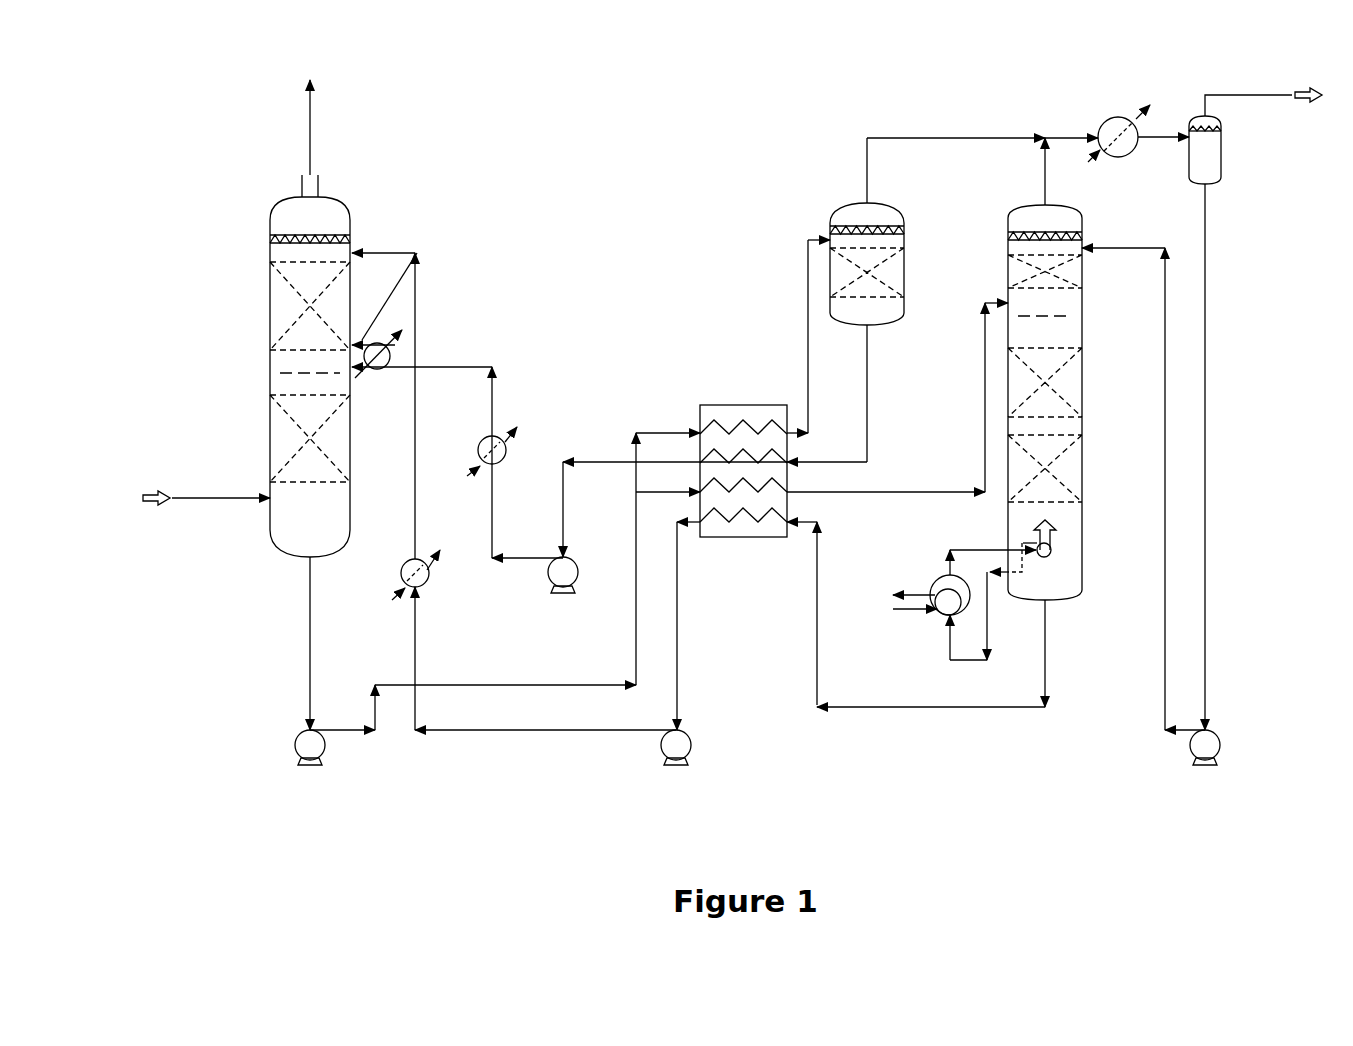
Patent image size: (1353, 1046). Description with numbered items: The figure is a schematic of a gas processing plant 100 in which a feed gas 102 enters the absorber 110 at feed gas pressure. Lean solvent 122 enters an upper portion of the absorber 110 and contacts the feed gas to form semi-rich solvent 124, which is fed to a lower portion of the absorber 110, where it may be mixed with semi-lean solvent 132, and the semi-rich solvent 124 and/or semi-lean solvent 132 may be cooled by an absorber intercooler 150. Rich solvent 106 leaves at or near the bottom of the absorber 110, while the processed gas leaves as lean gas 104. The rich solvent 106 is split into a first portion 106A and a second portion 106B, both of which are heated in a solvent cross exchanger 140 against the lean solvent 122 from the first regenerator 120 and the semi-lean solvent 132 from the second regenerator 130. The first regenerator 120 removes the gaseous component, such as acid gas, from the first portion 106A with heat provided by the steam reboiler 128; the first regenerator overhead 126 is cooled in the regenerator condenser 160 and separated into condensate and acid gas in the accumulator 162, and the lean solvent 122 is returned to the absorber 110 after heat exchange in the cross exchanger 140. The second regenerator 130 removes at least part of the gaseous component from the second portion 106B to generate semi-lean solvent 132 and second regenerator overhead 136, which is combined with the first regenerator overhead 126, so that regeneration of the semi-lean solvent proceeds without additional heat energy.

The plant 100 is at (598, 96).
The feed gas 102 is at (193, 498).
The lean gas 104 is at (312, 135).
The rich solvent 106 is at (310, 630).
The first portion 106A is at (683, 490).
The second portion 106B is at (665, 432).
The absorber 110 is at (270, 373).
The first regenerator 120 is at (1062, 600).
The lean solvent 122 is at (378, 252).
The semi-rich solvent 124 is at (417, 253).
The first regenerator overhead 126 is at (1042, 170).
The steam reboiler 128 is at (933, 623).
The second regenerator 130 is at (840, 200).
The semi-lean solvent 132 is at (477, 367).
The second regenerator overhead 136 is at (920, 138).
The solvent cross exchanger 140 is at (722, 405).
The absorber intercooler 150 is at (375, 343).
The regenerator condenser 160 is at (1122, 122).
The accumulator 162 is at (1221, 168).